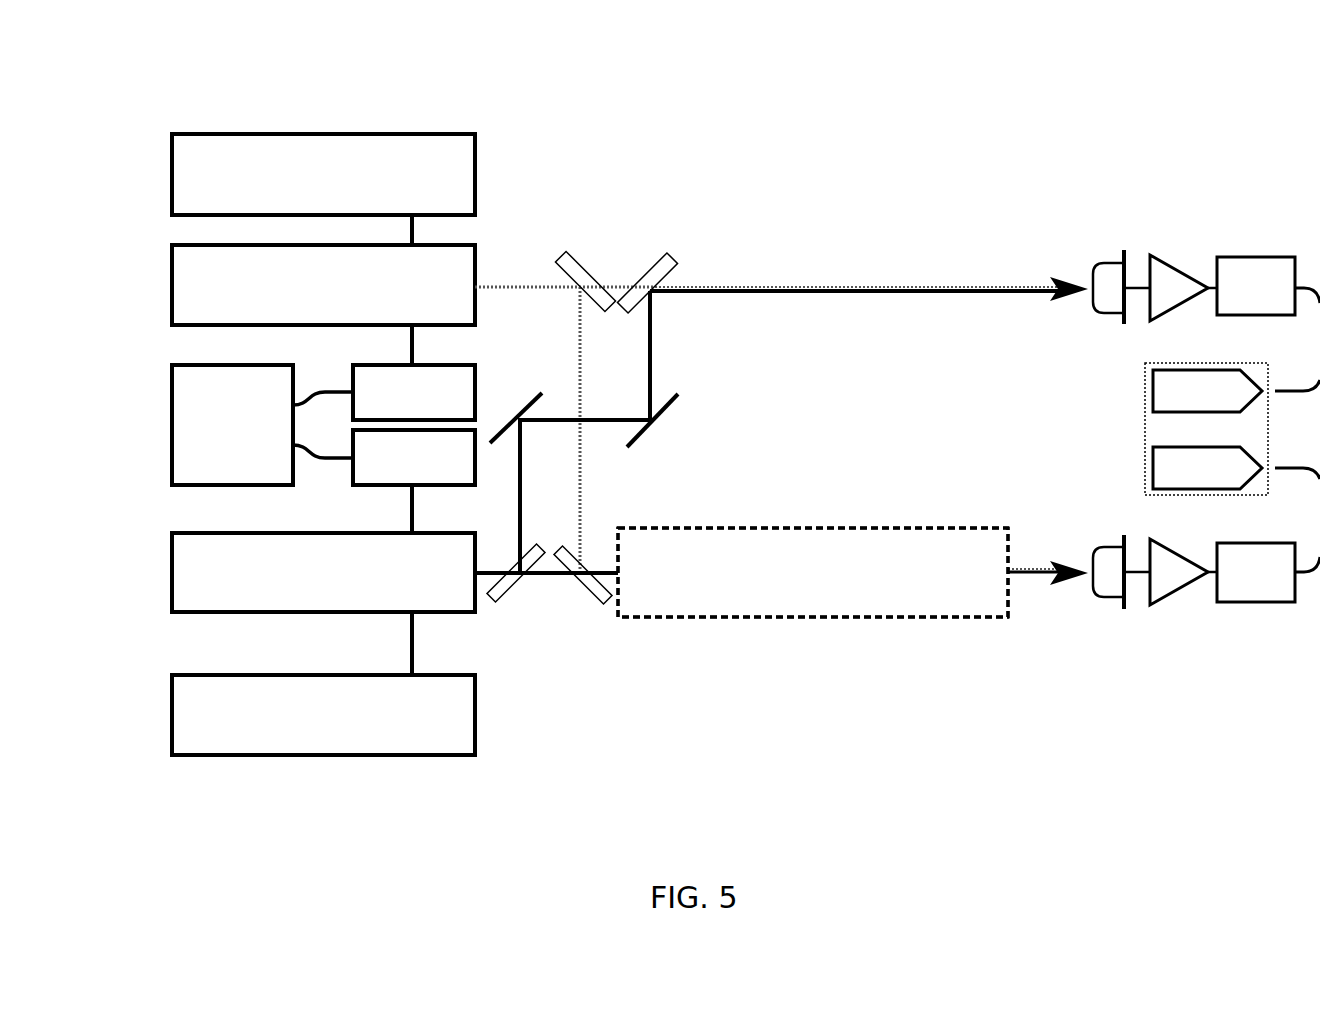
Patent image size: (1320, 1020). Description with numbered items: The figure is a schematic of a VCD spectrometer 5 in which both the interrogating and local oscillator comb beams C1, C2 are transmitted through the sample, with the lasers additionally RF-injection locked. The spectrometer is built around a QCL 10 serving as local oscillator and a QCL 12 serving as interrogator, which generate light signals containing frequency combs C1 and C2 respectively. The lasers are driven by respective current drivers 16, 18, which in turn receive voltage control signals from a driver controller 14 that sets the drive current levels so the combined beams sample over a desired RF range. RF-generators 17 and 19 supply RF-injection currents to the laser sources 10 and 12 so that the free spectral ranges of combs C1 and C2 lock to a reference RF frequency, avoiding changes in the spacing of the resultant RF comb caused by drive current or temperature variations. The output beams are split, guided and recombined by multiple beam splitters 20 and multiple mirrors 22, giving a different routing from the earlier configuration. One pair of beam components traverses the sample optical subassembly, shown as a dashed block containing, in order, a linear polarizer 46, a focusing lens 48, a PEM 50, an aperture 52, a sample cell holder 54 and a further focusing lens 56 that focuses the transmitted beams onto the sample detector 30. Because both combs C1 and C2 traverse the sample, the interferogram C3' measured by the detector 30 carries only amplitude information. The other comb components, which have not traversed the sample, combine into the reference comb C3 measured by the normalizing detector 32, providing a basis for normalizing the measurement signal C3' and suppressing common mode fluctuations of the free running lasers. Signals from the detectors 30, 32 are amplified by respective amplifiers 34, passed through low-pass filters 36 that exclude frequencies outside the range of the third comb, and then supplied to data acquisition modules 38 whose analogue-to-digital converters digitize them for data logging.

The VCD spectrometer 5 is at (621, 97).
The RF-generator 17 is at (353, 134).
The QCL local oscillator 10 is at (172, 280).
The driver controller 14 is at (172, 412).
The current driver 16 is at (455, 364).
The current driver 18 is at (348, 486).
The QCL interrogator 12 is at (172, 562).
The RF-generator 19 is at (328, 757).
The beam splitter 20 is at (655, 258).
The plane mirror 22 is at (523, 406).
The local oscillator frequency comb C1 is at (522, 284).
The interrogating frequency comb C2 is at (655, 340).
The reference combined comb C3 is at (874, 338).
The interferogram of the combined signal C3' is at (1063, 528).
The sample detector 30 is at (1105, 598).
The normalizing detector 32 is at (1098, 260).
The amplifier 34 is at (1163, 255).
The low-pass filter 36 is at (1245, 257).
The data acquisition module 38 is at (1145, 426).
The linear polarizer 46 is at (973, 710).
The focusing lens 48 is at (813, 572).
The PEM 50 is at (813, 572).
The aperture 52 is at (813, 572).
The sample cell holder 54 is at (813, 572).
The further focusing lens 56 is at (813, 572).